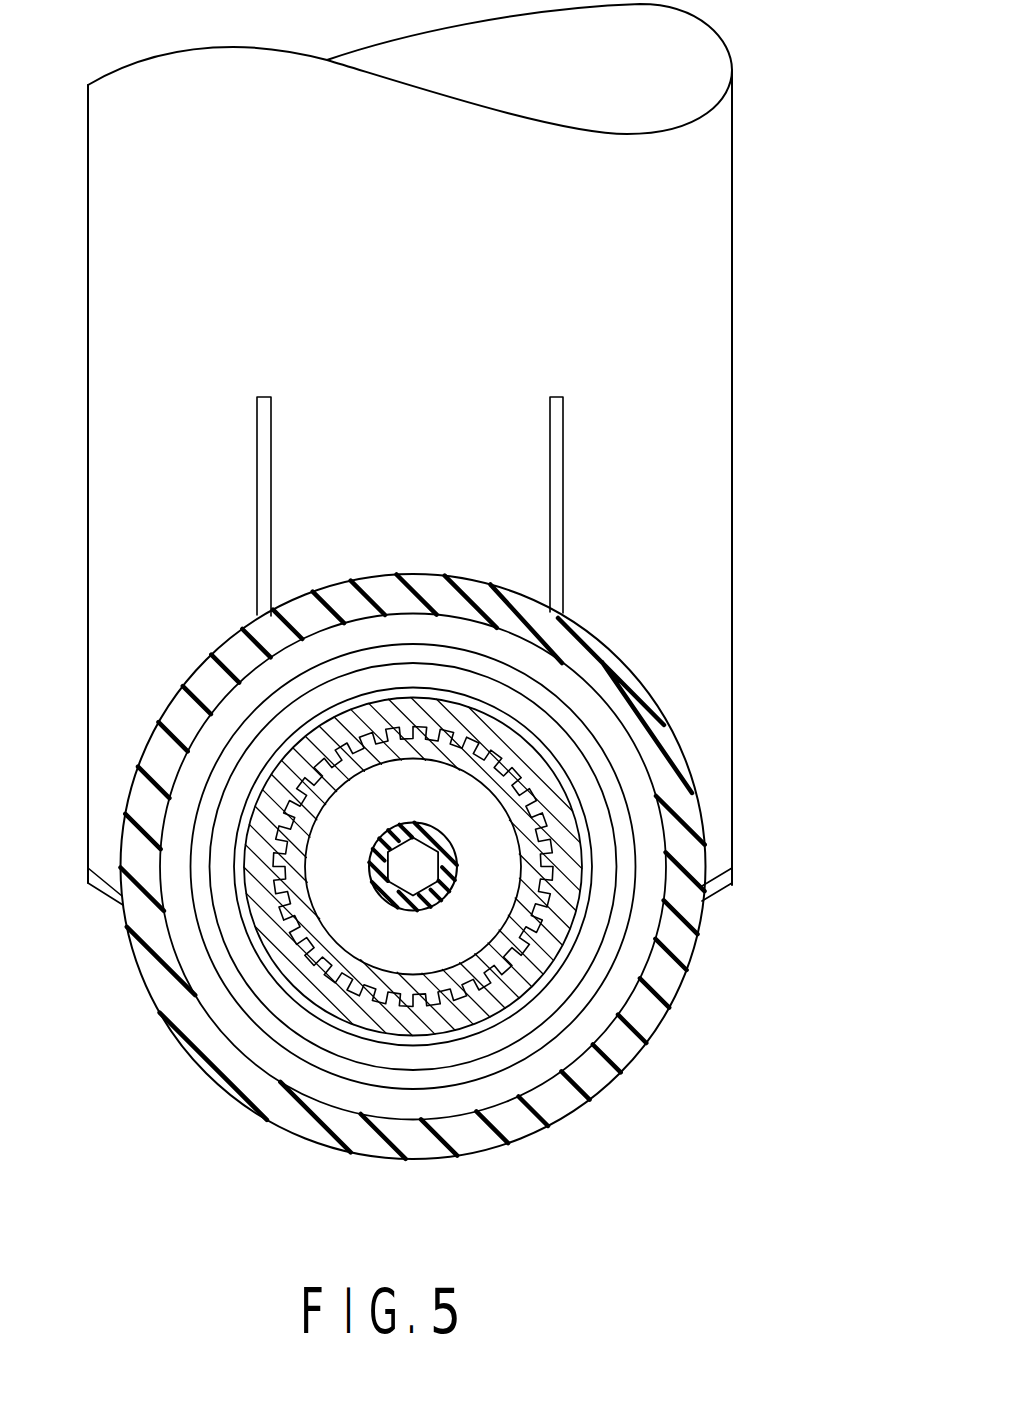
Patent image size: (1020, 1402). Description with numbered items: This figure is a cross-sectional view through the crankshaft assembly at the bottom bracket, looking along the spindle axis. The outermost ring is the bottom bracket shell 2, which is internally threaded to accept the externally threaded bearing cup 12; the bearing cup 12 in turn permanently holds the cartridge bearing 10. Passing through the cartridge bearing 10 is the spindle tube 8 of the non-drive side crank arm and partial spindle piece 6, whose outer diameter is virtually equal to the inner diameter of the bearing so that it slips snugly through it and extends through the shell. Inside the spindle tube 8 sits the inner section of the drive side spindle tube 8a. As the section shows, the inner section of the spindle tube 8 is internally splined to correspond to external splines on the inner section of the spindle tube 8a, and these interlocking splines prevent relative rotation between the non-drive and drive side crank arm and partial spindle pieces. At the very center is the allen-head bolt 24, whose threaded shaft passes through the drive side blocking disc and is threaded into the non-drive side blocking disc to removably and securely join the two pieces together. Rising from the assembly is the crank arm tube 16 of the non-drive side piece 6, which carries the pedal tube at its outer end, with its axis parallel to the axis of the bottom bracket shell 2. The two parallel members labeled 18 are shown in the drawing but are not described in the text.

The bottom bracket shell 2 is at (480, 1157).
The non-drive side crank arm and partial spindle piece 6 is at (735, 236).
The non-drive side spindle tube 8 is at (495, 737).
The drive side spindle tube 8a is at (485, 980).
The non-drive side cartridge bearing 10 is at (630, 950).
The non-drive side bearing cup 12 is at (598, 1010).
The crank arm tube 16 is at (733, 452).
The pins 18 is at (272, 470).
The allen-head bolt 24 is at (452, 829).